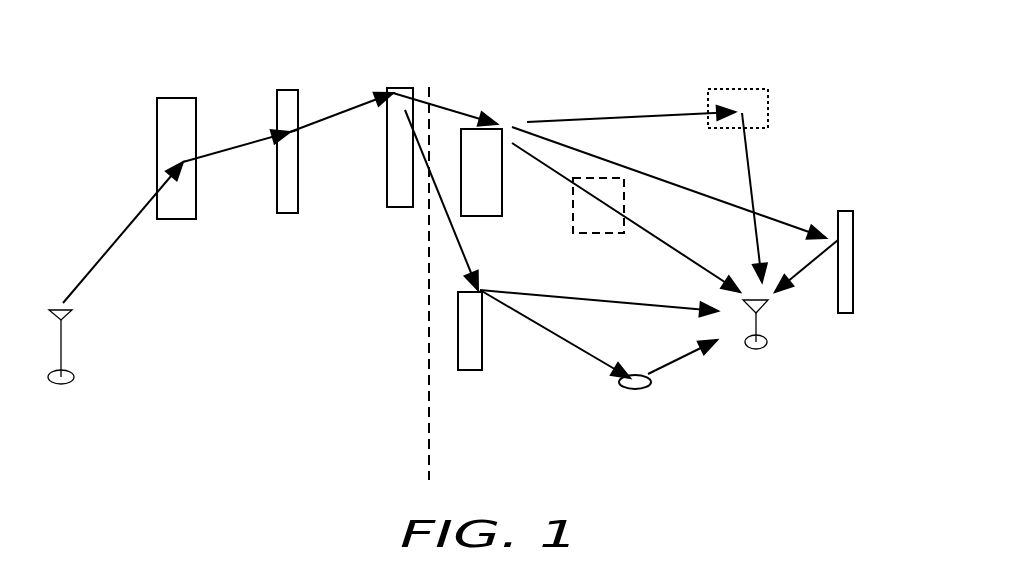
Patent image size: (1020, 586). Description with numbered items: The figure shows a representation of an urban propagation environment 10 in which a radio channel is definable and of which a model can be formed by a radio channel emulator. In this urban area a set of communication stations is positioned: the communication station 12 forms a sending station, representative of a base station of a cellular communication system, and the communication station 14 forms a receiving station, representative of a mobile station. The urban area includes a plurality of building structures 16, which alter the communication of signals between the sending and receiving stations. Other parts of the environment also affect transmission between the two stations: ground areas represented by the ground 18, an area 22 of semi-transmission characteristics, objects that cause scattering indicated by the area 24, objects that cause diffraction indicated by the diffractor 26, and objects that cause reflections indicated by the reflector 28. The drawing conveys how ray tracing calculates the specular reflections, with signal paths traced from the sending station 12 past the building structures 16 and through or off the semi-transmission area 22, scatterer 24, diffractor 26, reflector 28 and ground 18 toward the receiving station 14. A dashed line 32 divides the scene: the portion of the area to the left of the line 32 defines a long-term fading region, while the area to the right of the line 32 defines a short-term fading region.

The radio wave propagation environment 10 is at (558, 31).
The communication station (sending station) 12 is at (68, 380).
The communication station (receiving station) 14 is at (766, 350).
The building structures 16 is at (175, 96).
The ground 18 is at (652, 384).
The area of semi-transmission characteristics 22 is at (626, 205).
The scattering area 24 is at (770, 112).
The diffractor 26 is at (483, 356).
The reflector 28 is at (855, 290).
The line 32 is at (428, 392).